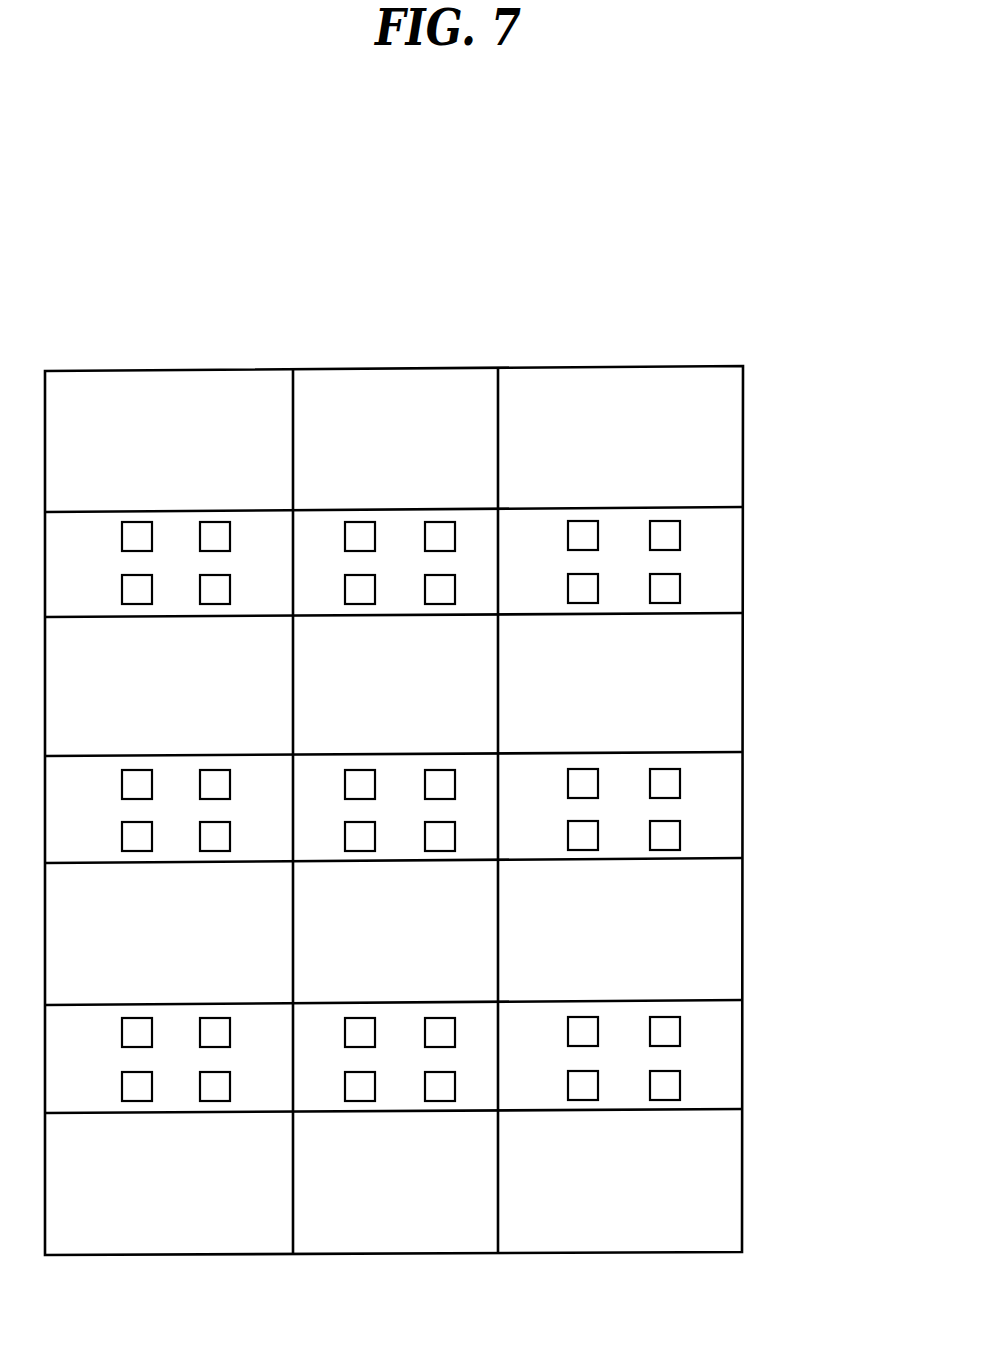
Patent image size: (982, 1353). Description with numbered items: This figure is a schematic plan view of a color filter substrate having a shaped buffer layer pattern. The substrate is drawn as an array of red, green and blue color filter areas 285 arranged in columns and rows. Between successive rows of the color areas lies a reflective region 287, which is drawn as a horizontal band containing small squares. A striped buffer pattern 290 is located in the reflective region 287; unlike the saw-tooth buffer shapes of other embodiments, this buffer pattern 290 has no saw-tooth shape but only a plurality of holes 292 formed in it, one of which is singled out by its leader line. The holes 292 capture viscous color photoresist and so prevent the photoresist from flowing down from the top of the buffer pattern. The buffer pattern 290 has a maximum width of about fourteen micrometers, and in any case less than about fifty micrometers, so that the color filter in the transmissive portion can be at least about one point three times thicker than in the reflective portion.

The color pixel region 285 is at (722, 403).
The buffer pattern 290 is at (690, 503).
The reflective region 287 is at (712, 567).
The holes 292 is at (672, 1024).